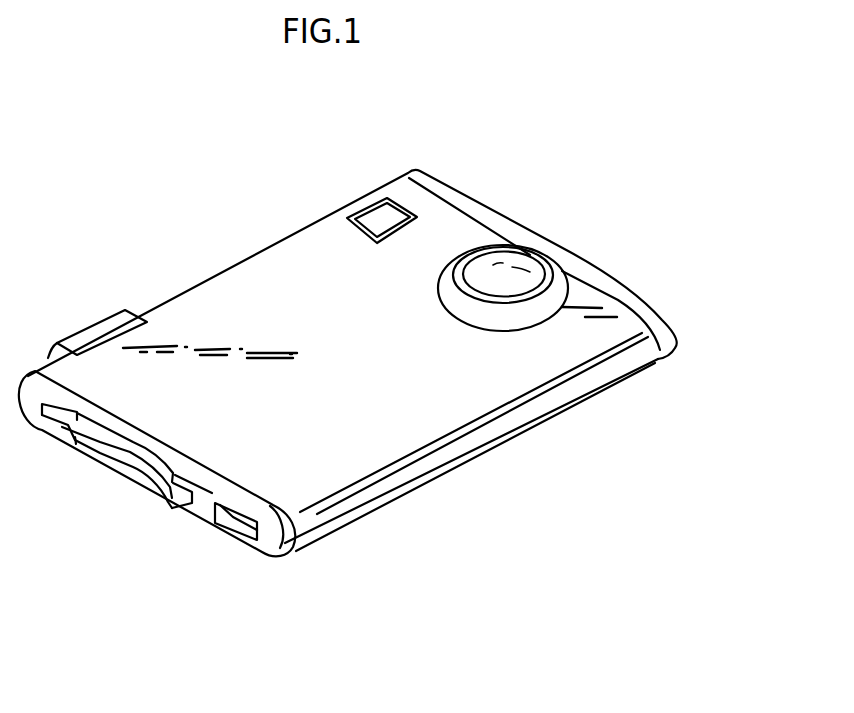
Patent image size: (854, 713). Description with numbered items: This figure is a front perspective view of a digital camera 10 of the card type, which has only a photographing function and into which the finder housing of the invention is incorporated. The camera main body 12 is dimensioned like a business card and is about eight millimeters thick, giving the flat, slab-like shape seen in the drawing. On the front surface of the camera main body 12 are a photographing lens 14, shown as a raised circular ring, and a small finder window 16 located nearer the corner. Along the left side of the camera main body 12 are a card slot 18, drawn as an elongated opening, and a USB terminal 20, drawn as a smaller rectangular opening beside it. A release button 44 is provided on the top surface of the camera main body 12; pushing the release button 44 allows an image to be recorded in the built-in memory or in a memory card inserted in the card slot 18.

The digital camera 10 is at (157, 130).
The camera main body 12 is at (428, 420).
The photographing lens 14 is at (510, 287).
The finder window 16 is at (378, 222).
The card slot 18 is at (65, 425).
The USB terminal 20 is at (233, 518).
The release button 44 is at (91, 337).